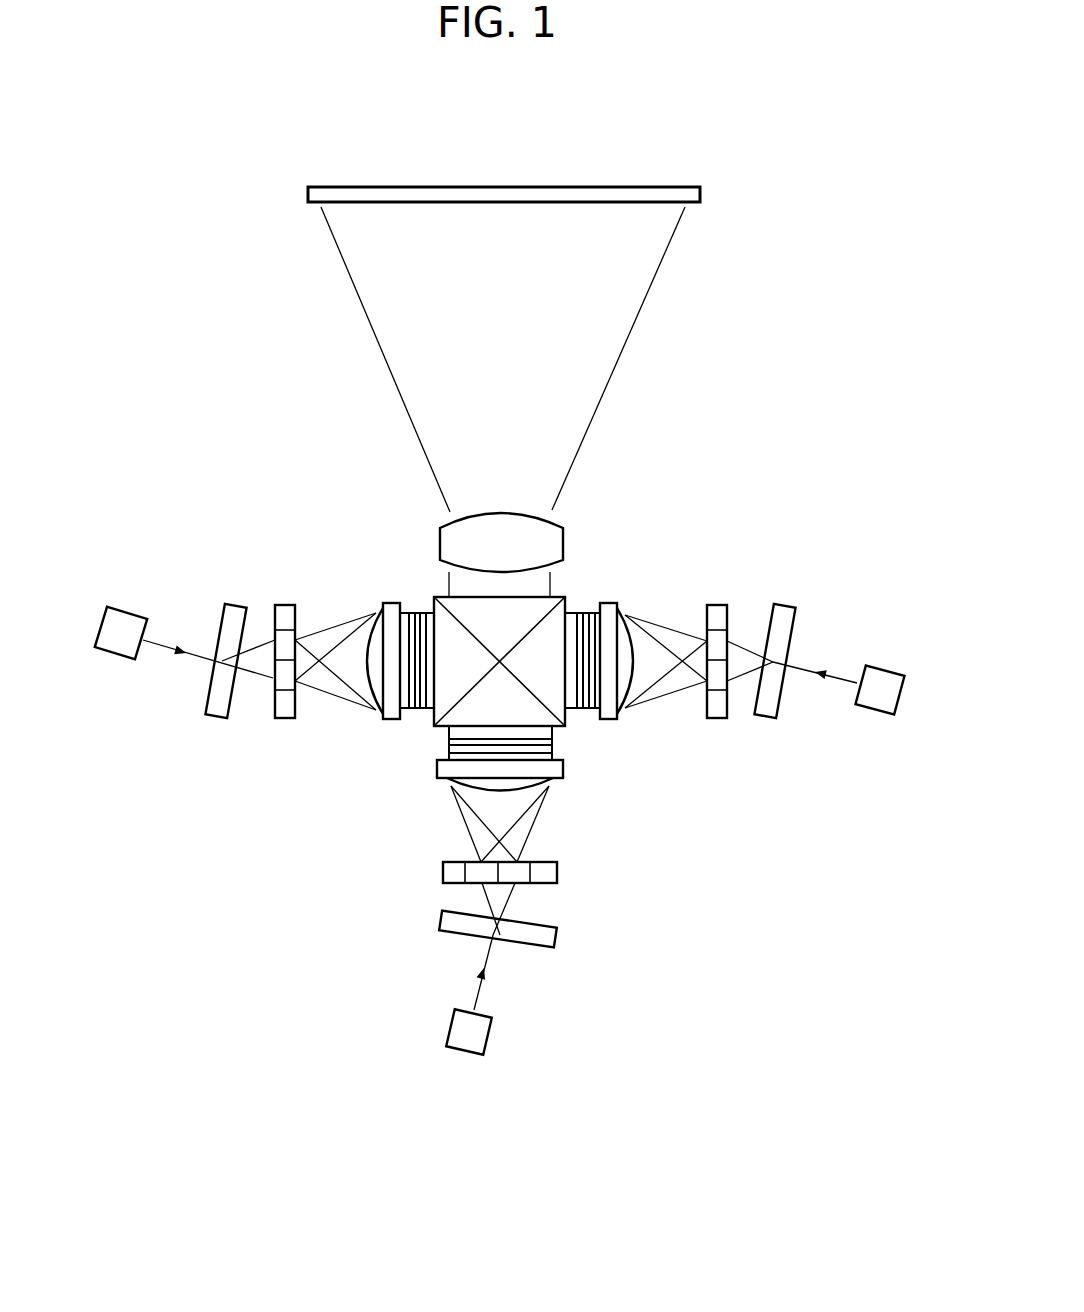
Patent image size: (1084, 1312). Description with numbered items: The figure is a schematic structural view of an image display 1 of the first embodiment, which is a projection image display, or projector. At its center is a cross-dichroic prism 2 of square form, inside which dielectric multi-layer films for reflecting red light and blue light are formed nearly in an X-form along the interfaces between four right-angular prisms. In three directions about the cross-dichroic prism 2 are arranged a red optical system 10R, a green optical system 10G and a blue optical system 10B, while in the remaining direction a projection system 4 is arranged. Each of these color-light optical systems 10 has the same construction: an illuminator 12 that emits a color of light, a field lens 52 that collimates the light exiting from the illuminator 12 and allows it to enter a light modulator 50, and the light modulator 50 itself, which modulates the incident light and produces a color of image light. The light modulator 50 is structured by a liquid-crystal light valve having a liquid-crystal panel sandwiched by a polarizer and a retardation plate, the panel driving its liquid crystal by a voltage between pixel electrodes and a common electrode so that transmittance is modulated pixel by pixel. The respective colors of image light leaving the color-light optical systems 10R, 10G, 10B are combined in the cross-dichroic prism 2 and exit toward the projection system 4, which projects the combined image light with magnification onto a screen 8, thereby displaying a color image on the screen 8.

The image display 1 is at (762, 158).
The cross-dichroic prism 2 is at (438, 597).
The projection system 4 is at (437, 540).
The screen 8 is at (588, 186).
The color-light optical system 10 is at (159, 570).
The red optical system 10R is at (139, 568).
The blue optical system 10B is at (829, 580).
The green optical system 10G is at (483, 1072).
The illuminator 12 is at (290, 737).
The light modulator 50 is at (415, 712).
The field lens 52 is at (378, 716).